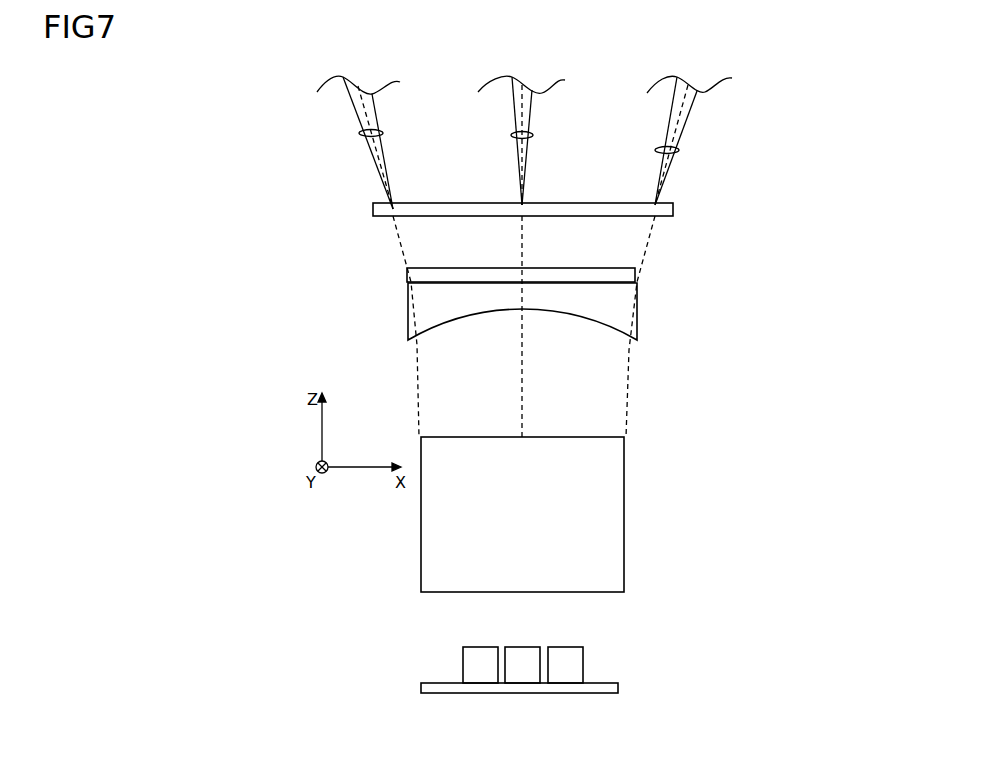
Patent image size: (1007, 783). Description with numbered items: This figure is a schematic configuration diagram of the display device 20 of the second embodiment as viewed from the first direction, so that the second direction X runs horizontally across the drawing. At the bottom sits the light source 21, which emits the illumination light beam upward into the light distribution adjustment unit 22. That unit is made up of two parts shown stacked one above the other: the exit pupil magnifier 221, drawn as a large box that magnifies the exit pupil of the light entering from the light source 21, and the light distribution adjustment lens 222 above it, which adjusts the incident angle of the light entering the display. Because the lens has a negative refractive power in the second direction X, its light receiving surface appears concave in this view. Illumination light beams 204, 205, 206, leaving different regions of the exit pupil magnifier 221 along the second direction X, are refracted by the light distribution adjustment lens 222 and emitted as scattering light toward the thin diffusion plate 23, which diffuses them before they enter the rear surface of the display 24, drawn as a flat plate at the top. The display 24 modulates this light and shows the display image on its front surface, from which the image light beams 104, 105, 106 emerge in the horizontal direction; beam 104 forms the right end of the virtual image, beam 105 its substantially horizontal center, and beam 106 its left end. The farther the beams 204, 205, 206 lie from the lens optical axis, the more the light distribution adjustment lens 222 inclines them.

The display device 20 is at (740, 111).
The light source 21 is at (578, 642).
The light distribution adjustment unit 22 is at (577, 437).
The diffusion plate 23 is at (633, 270).
The display 24 is at (673, 208).
The image light beam 104 is at (682, 151).
The image light beam 105 is at (536, 135).
The image light beam 106 is at (386, 134).
The illumination light beam 204 is at (643, 233).
The illumination light beam 205 is at (522, 229).
The illumination light beam 206 is at (402, 247).
The exit pupil magnifier 221 is at (608, 490).
The light distribution adjustment lens 222 is at (637, 341).